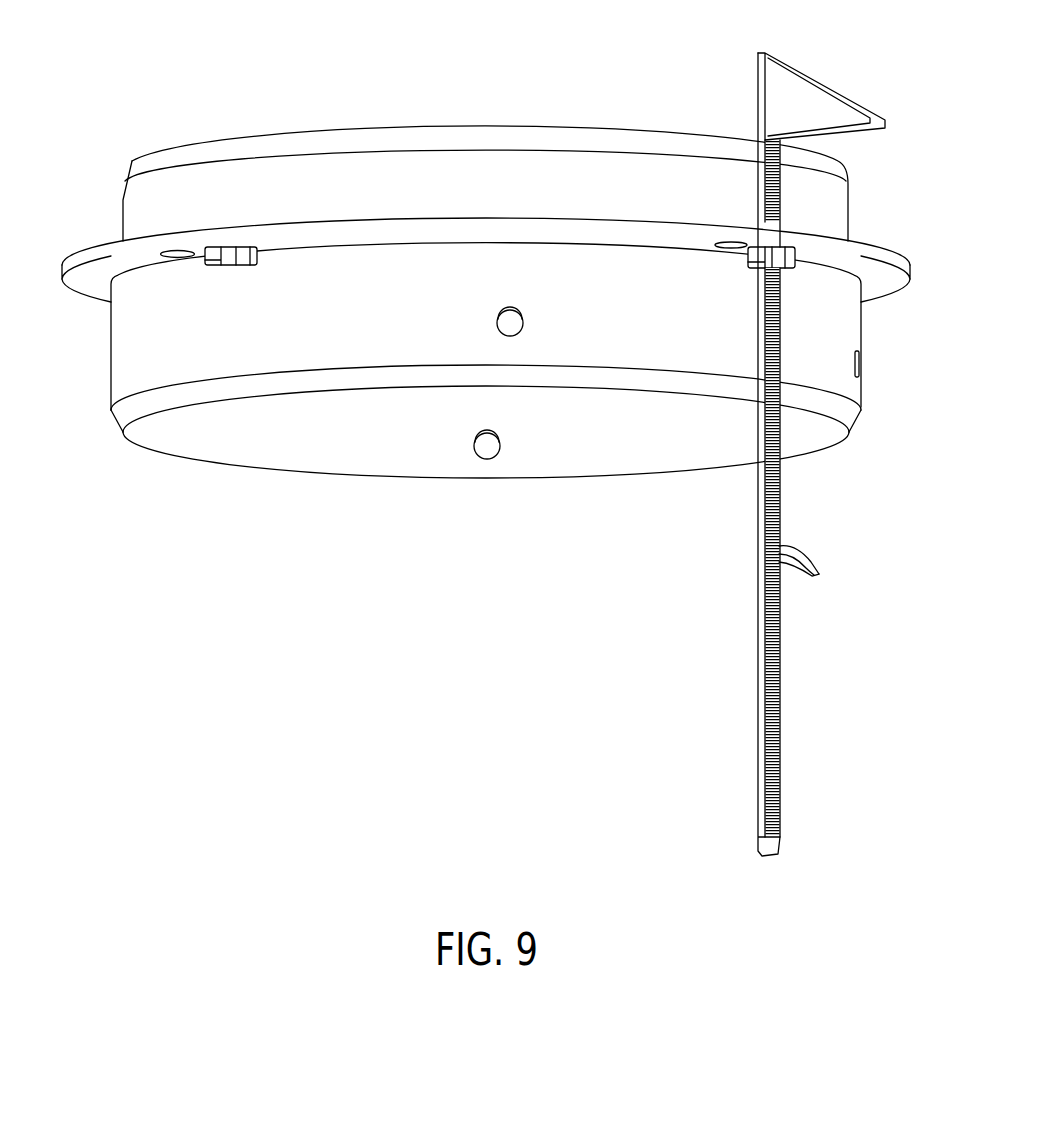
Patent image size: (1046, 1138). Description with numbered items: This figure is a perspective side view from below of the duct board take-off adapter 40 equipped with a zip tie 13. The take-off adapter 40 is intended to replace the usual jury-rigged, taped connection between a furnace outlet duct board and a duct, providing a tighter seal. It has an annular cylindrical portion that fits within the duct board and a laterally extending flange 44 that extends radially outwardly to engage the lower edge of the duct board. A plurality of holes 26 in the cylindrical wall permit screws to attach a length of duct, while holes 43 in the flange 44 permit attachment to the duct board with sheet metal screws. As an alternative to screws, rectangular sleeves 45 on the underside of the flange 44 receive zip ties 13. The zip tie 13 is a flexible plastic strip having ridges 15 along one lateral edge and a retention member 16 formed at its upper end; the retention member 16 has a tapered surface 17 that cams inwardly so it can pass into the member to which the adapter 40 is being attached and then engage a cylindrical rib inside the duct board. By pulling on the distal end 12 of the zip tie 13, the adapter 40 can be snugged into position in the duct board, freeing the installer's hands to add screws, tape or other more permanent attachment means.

The take-off adapter 40 is at (486, 287).
The flange 44 is at (482, 222).
The rectangular sleeves 45 is at (256, 256).
The holes 43 is at (168, 258).
The holes 26 is at (496, 322).
The distal ends 12 is at (776, 454).
The zip tie 13 is at (760, 565).
The ridges 15 is at (819, 574).
The retention member 16 is at (802, 117).
The tapered surface 17 is at (822, 83).